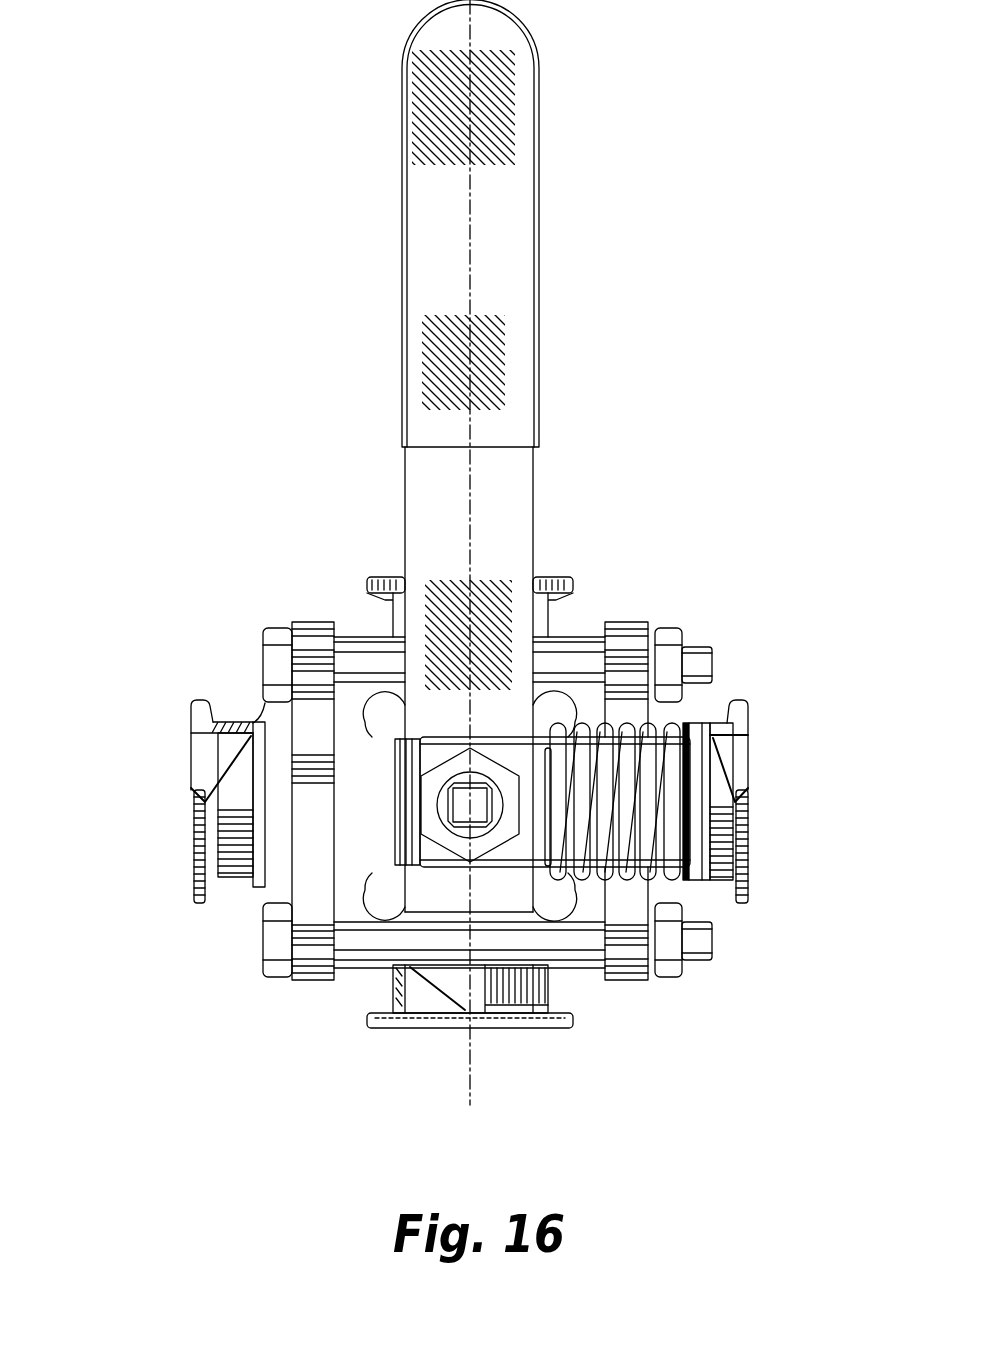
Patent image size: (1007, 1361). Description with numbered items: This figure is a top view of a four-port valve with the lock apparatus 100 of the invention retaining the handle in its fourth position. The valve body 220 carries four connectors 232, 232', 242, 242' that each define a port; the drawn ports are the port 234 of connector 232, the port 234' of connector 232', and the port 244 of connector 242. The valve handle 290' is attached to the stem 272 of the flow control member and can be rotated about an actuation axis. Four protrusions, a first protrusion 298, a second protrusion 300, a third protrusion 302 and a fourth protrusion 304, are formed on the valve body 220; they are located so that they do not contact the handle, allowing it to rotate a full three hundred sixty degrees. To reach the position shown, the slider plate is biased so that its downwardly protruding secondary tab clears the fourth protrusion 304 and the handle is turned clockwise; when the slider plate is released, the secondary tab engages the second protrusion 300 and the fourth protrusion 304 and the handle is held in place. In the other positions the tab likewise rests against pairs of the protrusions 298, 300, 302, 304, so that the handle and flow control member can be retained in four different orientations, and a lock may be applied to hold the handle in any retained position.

The handle 290' is at (519, 223).
The connector 242' is at (516, 579).
The first protrusion 298 is at (555, 697).
The second protrusion 300 is at (378, 722).
The port 234' is at (161, 858).
The port 234 is at (790, 858).
The lock apparatus 100 is at (724, 843).
The connector 232' is at (131, 903).
The connector 232 is at (799, 903).
The stem 272 is at (460, 805).
The valve body 220 is at (625, 985).
The fourth protrusion 304 is at (380, 887).
The third protrusion 302 is at (555, 888).
The port 244 is at (492, 1065).
The connector 242 is at (499, 1089).